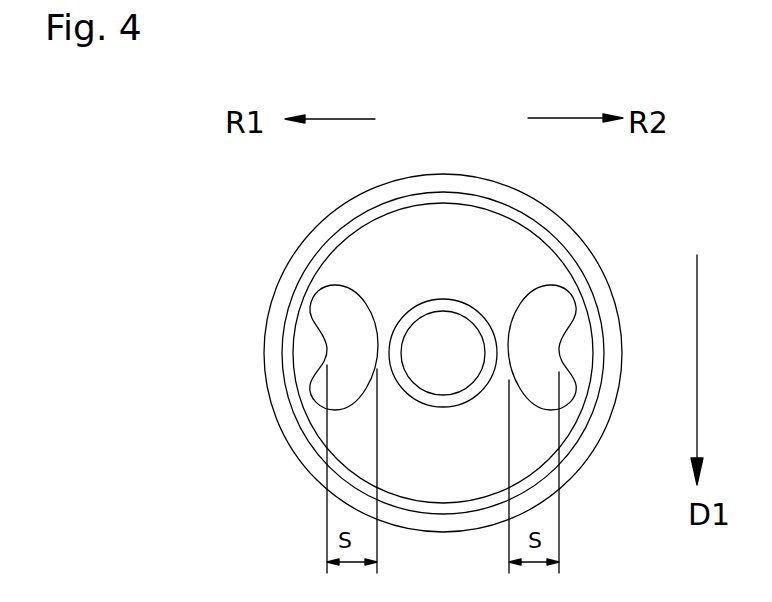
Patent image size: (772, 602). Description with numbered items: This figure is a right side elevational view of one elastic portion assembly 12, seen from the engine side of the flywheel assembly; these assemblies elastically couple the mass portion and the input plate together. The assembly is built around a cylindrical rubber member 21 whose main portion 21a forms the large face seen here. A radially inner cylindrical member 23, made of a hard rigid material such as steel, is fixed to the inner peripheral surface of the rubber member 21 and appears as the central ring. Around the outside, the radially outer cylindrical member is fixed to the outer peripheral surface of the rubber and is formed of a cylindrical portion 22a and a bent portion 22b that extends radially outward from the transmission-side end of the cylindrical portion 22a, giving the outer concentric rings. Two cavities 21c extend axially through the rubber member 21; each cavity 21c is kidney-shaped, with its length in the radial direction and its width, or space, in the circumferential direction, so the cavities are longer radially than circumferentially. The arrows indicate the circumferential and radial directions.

The elastic portion assembly 12 is at (500, 100).
The cylindrical rubber member 21 is at (272, 313).
The main portion 21a is at (498, 262).
The cavity 21c is at (318, 302).
The cylindrical portion 22a is at (303, 428).
The bent portion 22b is at (273, 382).
The radially inner cylindrical member 23 is at (422, 310).